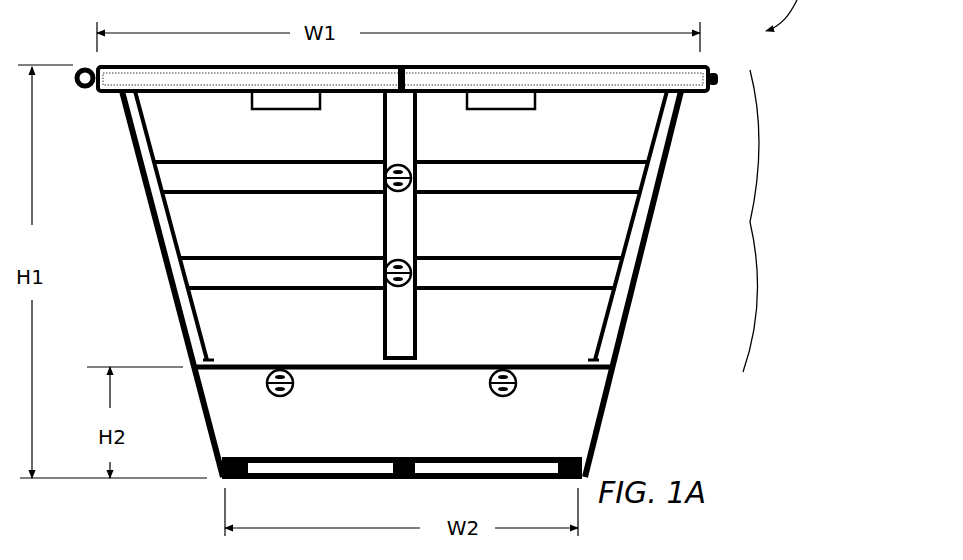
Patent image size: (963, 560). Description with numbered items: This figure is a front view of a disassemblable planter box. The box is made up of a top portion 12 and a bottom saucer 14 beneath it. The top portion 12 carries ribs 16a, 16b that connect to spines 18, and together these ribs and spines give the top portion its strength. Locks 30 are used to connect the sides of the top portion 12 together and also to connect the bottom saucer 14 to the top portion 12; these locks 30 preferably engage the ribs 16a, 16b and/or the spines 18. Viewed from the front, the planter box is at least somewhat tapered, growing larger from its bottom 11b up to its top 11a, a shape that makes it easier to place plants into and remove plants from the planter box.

The top 11a is at (776, 77).
The bottom 11b is at (625, 460).
The top portion 12 is at (752, 222).
The bottom saucer 14 is at (346, 425).
The ribs 16a is at (498, 175).
The ribs 16b is at (182, 177).
The spines 18 is at (168, 235).
The locks 30 is at (412, 190).